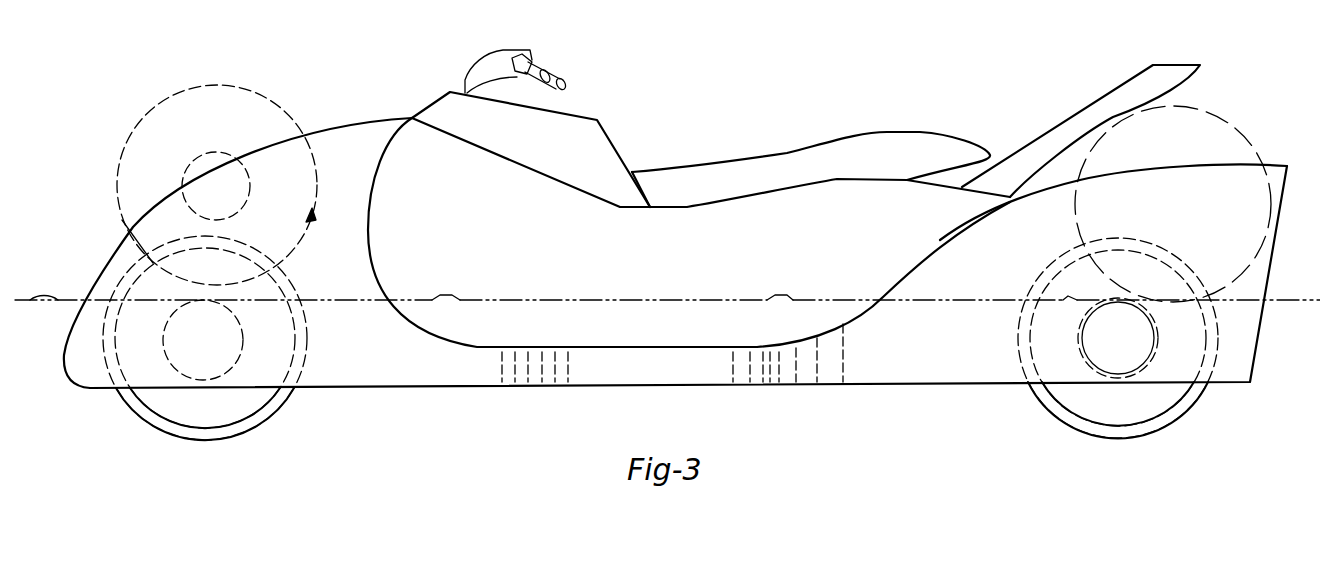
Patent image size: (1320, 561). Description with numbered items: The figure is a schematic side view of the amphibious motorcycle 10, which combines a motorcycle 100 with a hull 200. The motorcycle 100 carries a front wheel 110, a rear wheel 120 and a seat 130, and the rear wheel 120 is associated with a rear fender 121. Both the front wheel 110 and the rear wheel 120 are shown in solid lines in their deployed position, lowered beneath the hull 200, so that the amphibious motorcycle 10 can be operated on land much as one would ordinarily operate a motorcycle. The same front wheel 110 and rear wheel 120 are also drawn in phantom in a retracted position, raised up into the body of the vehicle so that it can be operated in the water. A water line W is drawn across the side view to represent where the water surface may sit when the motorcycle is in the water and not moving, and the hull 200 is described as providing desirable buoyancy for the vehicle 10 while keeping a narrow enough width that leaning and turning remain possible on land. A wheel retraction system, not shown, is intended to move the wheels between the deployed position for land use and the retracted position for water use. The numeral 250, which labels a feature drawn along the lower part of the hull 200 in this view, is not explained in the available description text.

The amphibious motorcycle 10 is at (758, 87).
The motorcycle 100 is at (612, 128).
The front wheel 110 is at (272, 409).
The rear wheel 120 is at (1117, 437).
The rear fender 121 is at (1048, 128).
The seat 130 is at (786, 152).
The hull 200 is at (708, 332).
The strakes 250 is at (498, 388).
The water line W is at (628, 300).